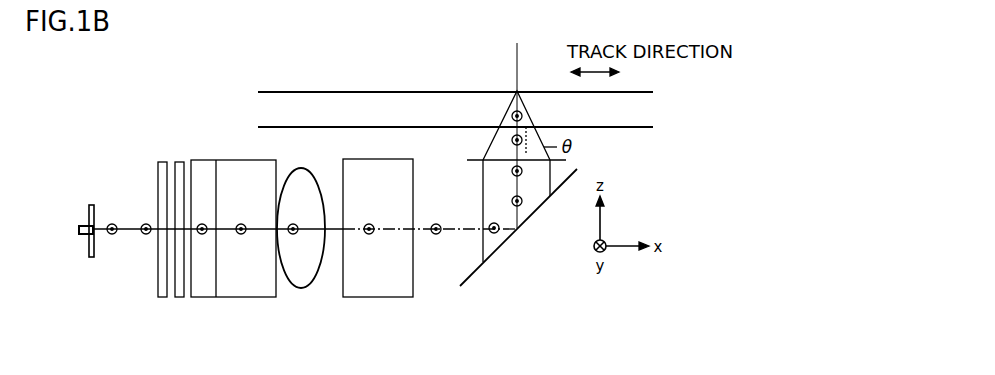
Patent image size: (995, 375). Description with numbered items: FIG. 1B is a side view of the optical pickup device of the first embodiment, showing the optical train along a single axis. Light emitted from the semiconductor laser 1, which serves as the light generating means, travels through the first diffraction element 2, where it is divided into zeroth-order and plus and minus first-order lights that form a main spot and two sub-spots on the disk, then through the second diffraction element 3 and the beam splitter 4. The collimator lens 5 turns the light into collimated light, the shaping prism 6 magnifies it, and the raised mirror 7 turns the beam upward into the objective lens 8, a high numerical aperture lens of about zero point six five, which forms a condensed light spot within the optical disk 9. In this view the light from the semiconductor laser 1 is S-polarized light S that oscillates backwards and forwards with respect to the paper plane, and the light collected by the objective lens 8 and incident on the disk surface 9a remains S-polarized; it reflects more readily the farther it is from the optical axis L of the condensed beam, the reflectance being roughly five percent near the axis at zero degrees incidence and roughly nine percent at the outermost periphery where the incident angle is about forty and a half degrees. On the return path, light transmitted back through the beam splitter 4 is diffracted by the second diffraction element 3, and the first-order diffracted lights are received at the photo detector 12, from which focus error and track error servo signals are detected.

The semiconductor laser 1 is at (86, 237).
The photo detector 12 is at (93, 204).
The first diffraction element 2 is at (165, 299).
The second diffraction element 3 is at (181, 299).
The beam splitter 4 is at (227, 298).
The collimator lens 5 is at (301, 289).
The shaping prism 6 is at (378, 298).
The raised mirror 7 is at (473, 275).
The objective lens 8 is at (474, 160).
The optical disk 9 is at (373, 95).
The disk surface 9a is at (634, 129).
The S-polarized light S is at (437, 222).
The optical axis L is at (519, 51).